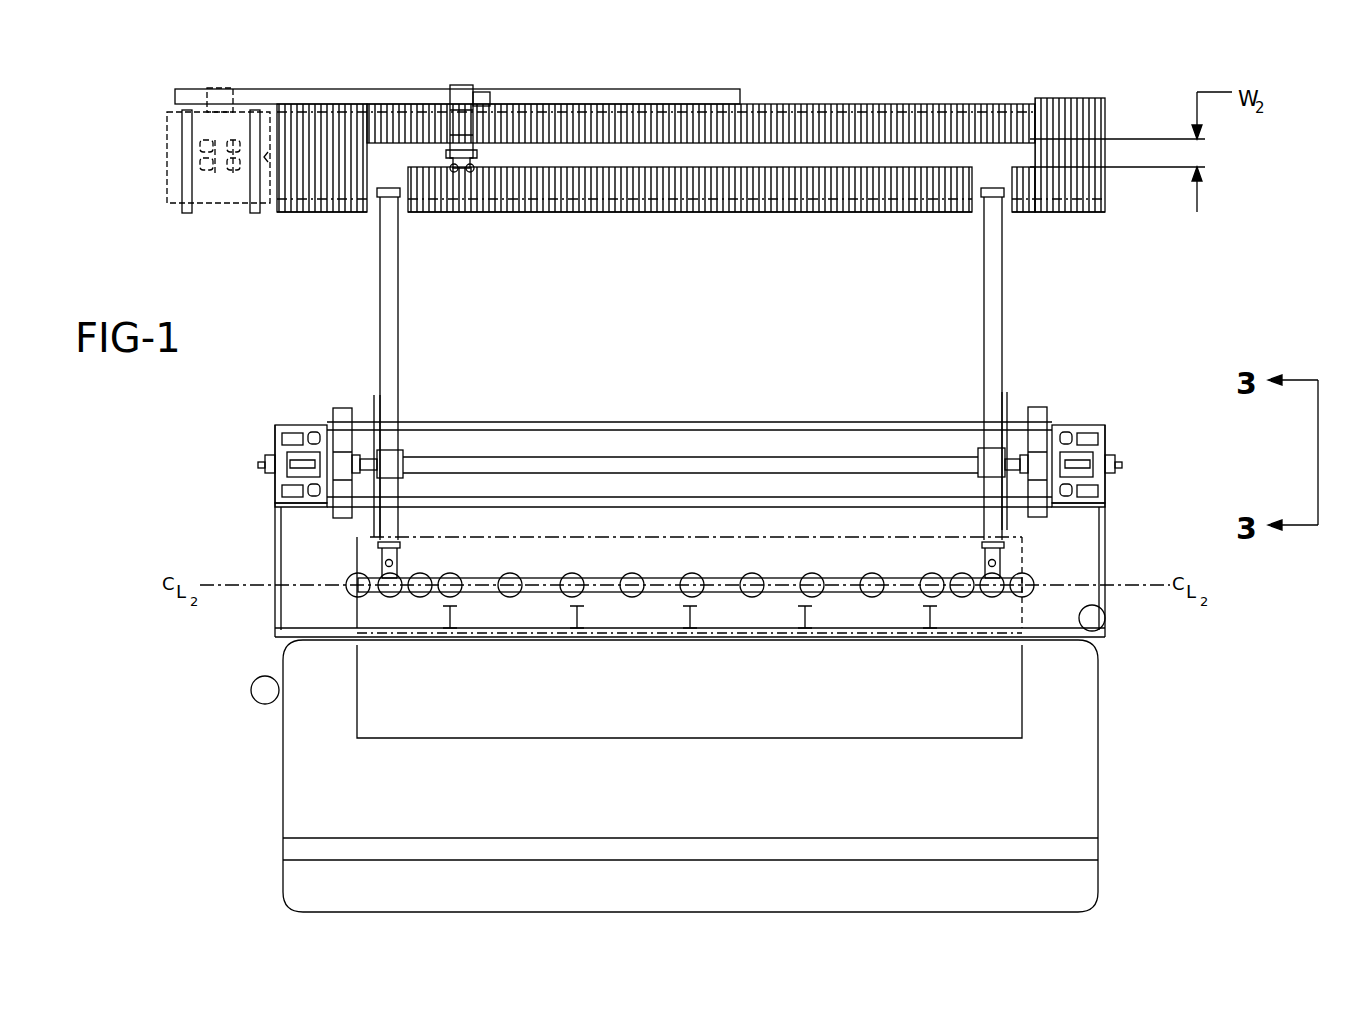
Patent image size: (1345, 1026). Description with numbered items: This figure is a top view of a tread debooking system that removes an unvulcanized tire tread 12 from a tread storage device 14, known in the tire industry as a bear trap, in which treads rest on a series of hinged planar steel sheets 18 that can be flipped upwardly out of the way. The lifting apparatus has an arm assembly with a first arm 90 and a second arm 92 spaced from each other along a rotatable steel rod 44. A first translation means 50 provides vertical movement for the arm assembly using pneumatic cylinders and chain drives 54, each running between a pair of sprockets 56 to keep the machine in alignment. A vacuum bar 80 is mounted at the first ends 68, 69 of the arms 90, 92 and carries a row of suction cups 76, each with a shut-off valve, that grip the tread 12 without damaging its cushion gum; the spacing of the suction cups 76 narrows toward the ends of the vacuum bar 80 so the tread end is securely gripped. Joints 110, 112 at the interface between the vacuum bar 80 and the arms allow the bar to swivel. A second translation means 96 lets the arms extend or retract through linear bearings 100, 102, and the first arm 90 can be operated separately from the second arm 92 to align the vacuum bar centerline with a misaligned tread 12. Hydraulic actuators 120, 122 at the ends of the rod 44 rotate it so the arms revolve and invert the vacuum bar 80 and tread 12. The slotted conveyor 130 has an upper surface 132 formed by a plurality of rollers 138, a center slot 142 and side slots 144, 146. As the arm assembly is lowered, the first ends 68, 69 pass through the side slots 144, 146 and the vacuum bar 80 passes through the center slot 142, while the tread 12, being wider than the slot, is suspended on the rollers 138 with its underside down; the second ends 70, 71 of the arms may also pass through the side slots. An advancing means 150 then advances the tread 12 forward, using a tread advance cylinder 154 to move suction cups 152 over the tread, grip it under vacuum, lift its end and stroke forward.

The unvulcanized tire tread 12 is at (645, 738).
The tread storage device 14 is at (1088, 800).
The planar steel sheets (trays) 18 is at (690, 808).
The rod 44 is at (705, 460).
The first translation means 50 is at (1112, 408).
The chain drive 54 is at (1115, 460).
The sprockets 56 is at (270, 462).
The first end of first arm 68 is at (386, 572).
The first end of second arm 69 is at (988, 572).
The second end of first arm 70 is at (388, 210).
The second end of second arm 71 is at (990, 210).
The suction cups 76 is at (512, 595).
The vacuum bar 80 is at (722, 593).
The first arm 90 is at (398, 300).
The second arm 92 is at (1002, 300).
The second translation means 96 is at (965, 402).
The linear bearing 100 is at (393, 460).
The linear bearing 102 is at (985, 460).
The joint 110 is at (392, 568).
The joint 112 is at (990, 565).
The hydraulic actuator 120 is at (340, 407).
The hydraulic actuator 122 is at (1045, 408).
The slotted conveyor 130 is at (1042, 212).
The upper surface of slotted conveyor 132 is at (840, 212).
The rollers 138 is at (770, 212).
The center slot 142 is at (755, 155).
The side slot 144 is at (388, 178).
The side slot 146 is at (1033, 148).
The advancing means 150 is at (463, 160).
The suction cups 152 is at (488, 150).
The tread advance cylinder 154 is at (600, 96).